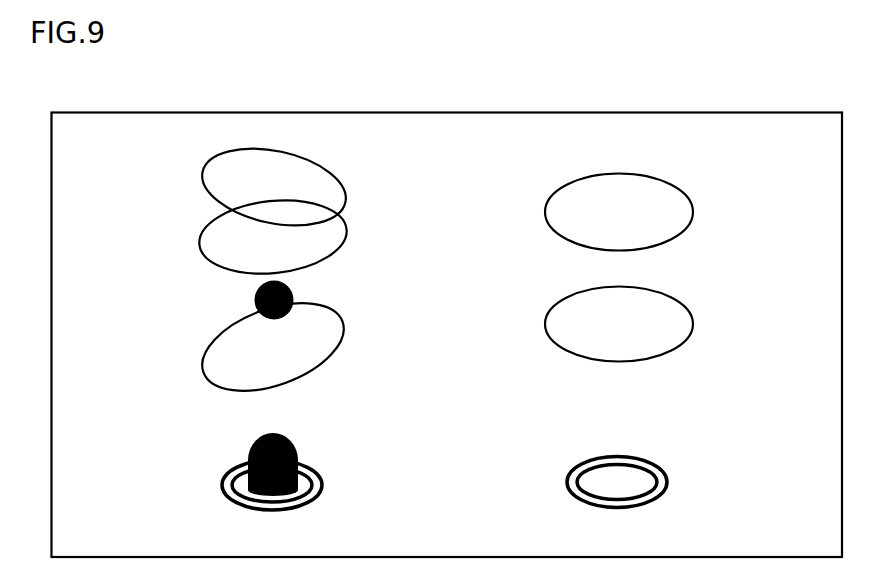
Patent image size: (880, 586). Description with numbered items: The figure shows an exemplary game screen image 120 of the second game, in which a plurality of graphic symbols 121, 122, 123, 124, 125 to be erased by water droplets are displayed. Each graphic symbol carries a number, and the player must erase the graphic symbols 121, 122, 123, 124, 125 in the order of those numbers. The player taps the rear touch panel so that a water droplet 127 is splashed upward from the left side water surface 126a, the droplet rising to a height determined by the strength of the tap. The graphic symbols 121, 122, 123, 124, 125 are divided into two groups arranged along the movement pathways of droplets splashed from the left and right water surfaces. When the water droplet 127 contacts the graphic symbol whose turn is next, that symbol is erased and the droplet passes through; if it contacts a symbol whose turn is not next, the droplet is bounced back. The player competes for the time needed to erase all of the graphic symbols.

The screen image 120 is at (802, 112).
The graphic symbol 121 is at (344, 325).
The graphic symbol 122 is at (693, 322).
The graphic symbol 123 is at (347, 228).
The graphic symbol 124 is at (693, 202).
The graphic symbol 125 is at (347, 200).
The left side water surface 126a is at (322, 482).
The water droplet 127 is at (255, 302).